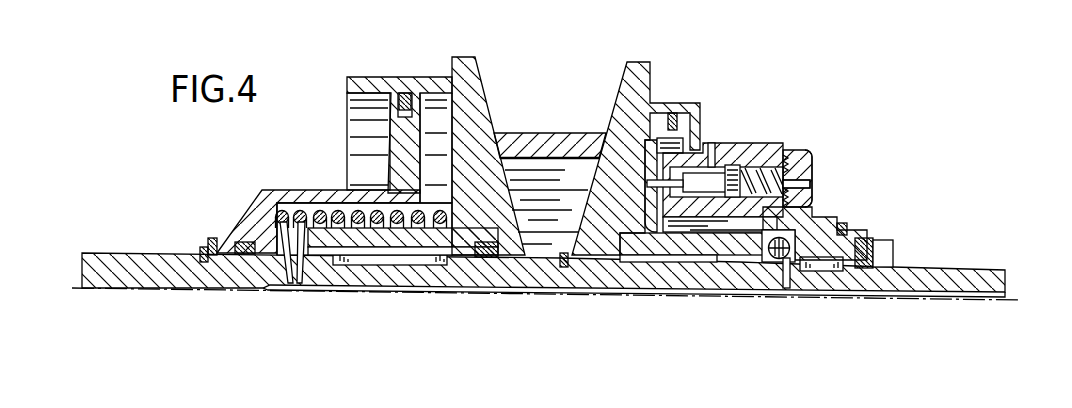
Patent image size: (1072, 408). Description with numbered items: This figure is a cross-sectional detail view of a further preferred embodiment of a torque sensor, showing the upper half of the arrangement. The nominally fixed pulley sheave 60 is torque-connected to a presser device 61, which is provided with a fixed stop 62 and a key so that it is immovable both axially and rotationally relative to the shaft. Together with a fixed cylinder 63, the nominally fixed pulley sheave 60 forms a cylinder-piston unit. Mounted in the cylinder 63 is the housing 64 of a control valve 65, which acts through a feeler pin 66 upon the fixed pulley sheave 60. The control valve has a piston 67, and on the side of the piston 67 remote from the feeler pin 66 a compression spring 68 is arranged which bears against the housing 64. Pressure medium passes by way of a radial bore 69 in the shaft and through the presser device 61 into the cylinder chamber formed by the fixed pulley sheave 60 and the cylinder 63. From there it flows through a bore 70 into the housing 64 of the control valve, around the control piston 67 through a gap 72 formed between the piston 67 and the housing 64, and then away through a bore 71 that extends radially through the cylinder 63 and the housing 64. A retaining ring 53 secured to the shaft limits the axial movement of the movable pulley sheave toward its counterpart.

The retaining ring 53 is at (565, 252).
The nominally fixed pulley sheave 60 is at (628, 88).
The presser device 61 is at (762, 257).
The fixed stop 62 is at (885, 250).
The fixed cylinder 63 is at (763, 150).
The housing 64 is at (803, 150).
The control valve 65 is at (803, 183).
The feeler pin 66 is at (658, 173).
The piston 67 is at (742, 172).
The compression spring 68 is at (787, 152).
The radial bore 69 is at (785, 272).
The bore 70 is at (808, 213).
The bore 71 is at (712, 163).
The gap 72 is at (732, 170).